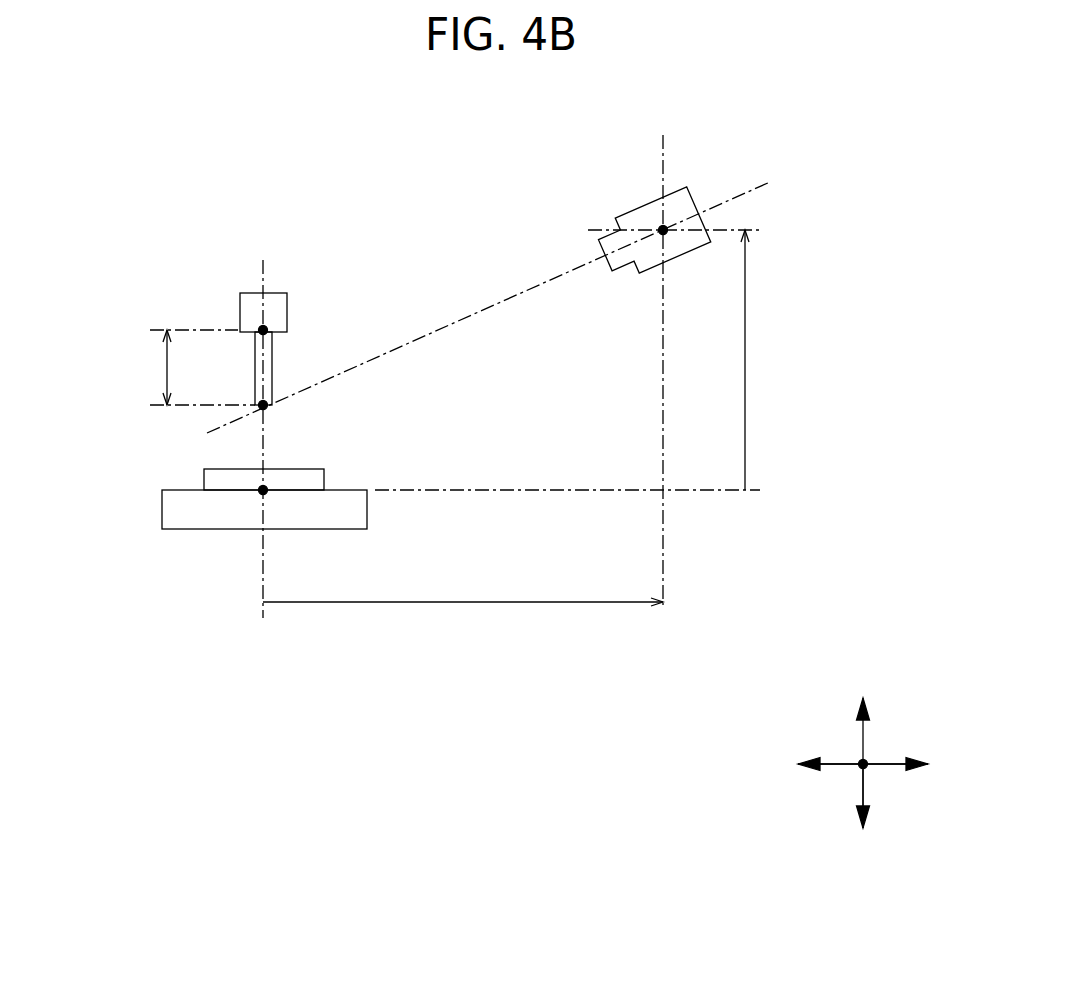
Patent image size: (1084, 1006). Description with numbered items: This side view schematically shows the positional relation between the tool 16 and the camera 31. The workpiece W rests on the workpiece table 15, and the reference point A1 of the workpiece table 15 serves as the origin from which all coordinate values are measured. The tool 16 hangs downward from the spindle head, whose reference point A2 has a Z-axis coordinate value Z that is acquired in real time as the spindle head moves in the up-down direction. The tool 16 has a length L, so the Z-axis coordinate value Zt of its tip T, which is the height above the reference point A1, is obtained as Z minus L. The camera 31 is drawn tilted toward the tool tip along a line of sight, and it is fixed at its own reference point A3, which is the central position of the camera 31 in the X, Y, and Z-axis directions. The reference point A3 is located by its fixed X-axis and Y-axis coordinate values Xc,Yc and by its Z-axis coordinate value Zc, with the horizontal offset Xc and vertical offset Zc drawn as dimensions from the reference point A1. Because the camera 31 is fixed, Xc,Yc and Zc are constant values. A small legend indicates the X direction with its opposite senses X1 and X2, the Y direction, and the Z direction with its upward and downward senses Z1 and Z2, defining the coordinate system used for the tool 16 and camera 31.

The workpiece table 15 is at (162, 511).
The tool 16 is at (273, 366).
The camera 31 is at (680, 188).
The workpiece W is at (324, 469).
The tip T is at (263, 405).
The reference point A1 is at (263, 490).
The reference point A2 is at (263, 330).
The reference point A3 is at (663, 232).
The length of the tool L is at (156, 367).
The coordinate value Z is at (273, 300).
The Z-axis coordinate value Zt is at (259, 410).
The Z-axis coordinate value Zc is at (772, 353).
The X-axis coordinate value Xc is at (467, 629).
The X-axis and Y-axis coordinate values Xc,Yc is at (659, 226).
The X-axis direction X is at (888, 762).
The Y-axis direction Y is at (855, 768).
The Z1 direction Z1 is at (864, 718).
The Z2 direction Z2 is at (864, 813).
The X1 direction X1 is at (912, 765).
The X2 direction X2 is at (812, 765).